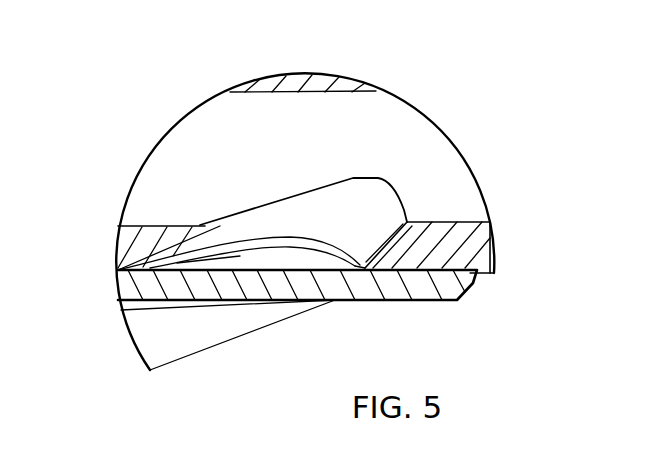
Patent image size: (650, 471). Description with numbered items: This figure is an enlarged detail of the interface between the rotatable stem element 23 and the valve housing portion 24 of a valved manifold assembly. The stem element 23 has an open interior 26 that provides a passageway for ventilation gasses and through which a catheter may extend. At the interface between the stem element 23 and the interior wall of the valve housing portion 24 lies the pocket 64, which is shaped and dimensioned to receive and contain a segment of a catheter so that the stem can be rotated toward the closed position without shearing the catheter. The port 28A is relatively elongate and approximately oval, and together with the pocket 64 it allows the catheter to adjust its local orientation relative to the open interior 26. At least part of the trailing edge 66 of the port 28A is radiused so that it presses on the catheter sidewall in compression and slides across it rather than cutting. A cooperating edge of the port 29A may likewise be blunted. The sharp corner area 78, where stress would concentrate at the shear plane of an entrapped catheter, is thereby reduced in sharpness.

The stem element 23 is at (470, 243).
The valve housing portion 24 is at (184, 288).
The open interior 26 is at (232, 173).
The port 28A is at (360, 228).
The port 29A is at (297, 257).
The pocket 64 is at (365, 197).
The trailing edge 66 is at (352, 262).
The sharp corner area 78 is at (214, 260).